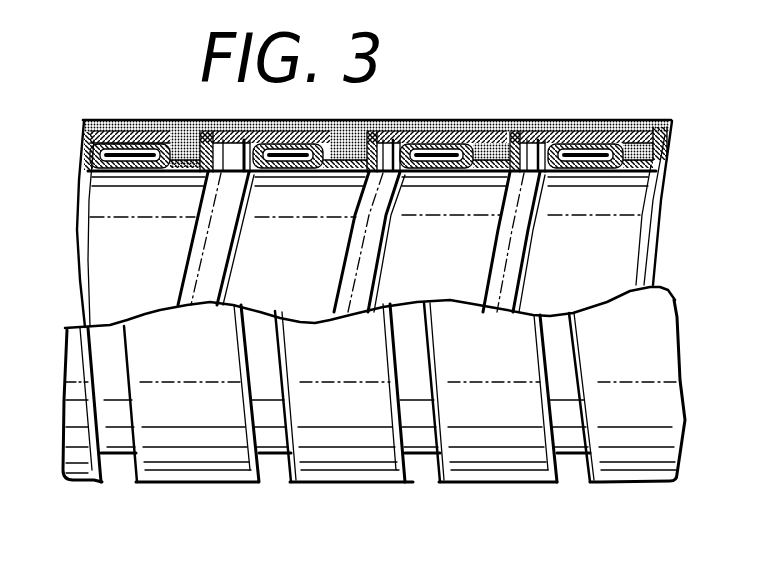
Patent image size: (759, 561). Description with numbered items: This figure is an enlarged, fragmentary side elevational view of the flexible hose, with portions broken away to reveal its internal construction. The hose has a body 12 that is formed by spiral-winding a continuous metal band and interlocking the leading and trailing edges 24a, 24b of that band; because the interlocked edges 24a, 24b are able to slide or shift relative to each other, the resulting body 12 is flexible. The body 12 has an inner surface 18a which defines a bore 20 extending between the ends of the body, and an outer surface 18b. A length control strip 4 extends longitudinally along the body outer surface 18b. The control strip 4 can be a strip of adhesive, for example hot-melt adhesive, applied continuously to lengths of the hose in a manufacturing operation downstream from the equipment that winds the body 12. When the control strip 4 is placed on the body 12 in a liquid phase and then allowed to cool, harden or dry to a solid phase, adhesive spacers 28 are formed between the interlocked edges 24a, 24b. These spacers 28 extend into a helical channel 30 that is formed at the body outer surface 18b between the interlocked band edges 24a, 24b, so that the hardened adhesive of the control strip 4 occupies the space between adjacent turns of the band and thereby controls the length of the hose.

The length control strip 4 is at (679, 123).
The body 12 is at (677, 474).
The inner surface 18a is at (452, 257).
The outer surface 18b is at (463, 370).
The bore 20 is at (293, 290).
The leading edge 24a is at (534, 140).
The trailing edge 24b is at (647, 120).
The adhesive spacers 28 is at (350, 178).
The helical channel 30 is at (494, 120).